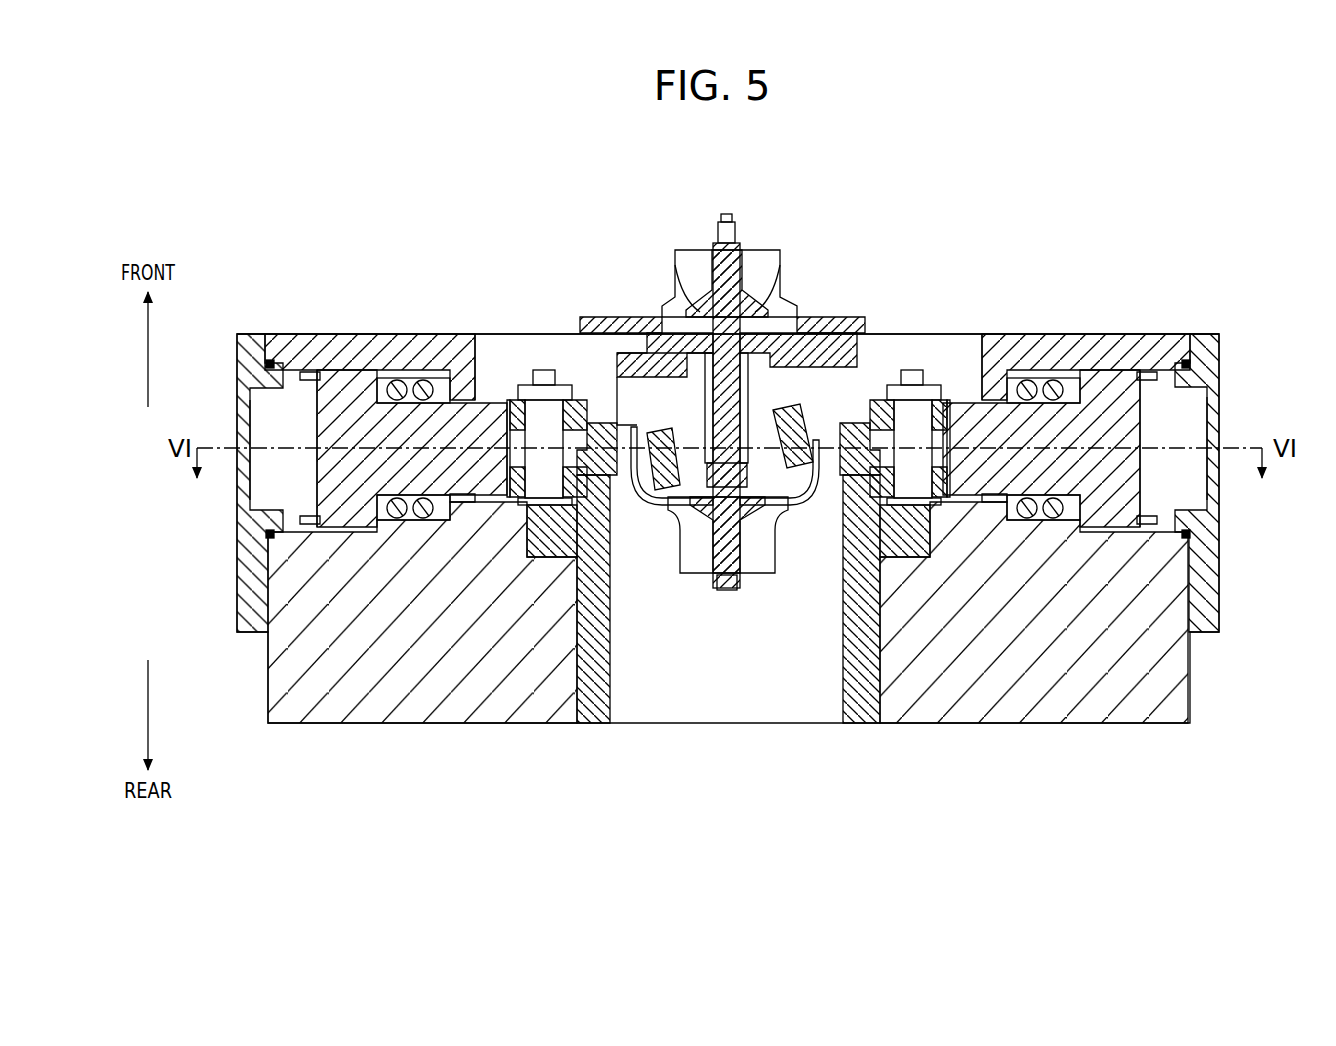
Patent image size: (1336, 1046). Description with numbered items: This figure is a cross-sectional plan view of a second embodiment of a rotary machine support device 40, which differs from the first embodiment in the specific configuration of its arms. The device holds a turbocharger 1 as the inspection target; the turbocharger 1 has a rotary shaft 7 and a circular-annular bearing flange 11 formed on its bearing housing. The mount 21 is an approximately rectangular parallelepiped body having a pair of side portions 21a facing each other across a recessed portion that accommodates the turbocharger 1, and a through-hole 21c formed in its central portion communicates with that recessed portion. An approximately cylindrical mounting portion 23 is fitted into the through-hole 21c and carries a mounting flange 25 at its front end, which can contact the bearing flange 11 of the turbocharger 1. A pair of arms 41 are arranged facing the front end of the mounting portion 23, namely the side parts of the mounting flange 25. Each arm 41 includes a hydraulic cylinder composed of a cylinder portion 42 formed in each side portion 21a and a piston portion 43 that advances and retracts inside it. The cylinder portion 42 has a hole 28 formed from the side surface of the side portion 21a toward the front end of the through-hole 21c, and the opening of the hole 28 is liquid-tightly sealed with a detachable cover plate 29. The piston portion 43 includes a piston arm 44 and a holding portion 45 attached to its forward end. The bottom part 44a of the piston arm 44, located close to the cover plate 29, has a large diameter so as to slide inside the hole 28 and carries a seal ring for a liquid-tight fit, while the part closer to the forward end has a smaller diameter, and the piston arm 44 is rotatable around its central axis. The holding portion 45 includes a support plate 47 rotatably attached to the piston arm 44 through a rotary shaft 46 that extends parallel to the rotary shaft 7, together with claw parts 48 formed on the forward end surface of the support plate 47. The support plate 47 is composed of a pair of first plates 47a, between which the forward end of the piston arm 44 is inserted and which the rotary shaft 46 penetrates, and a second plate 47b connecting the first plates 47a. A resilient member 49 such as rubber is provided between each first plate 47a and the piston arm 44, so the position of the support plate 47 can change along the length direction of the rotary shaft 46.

The turbocharger 1 is at (683, 218).
The rotary shaft 7 is at (728, 400).
The bearing flange 11 is at (665, 485).
The mount 21 is at (378, 727).
The side portions 21a is at (385, 345).
The through-hole 21c is at (877, 642).
The mounting portion 23 is at (577, 622).
The mounting flange 25 is at (640, 480).
The hole 28 is at (1085, 375).
The cover plate 29 is at (243, 410).
The rotary machine support device 40 is at (1205, 295).
The arms 41 is at (472, 355).
The cylinder portion 42 is at (297, 355).
The piston portion 43 is at (460, 520).
The piston arm 44 is at (488, 380).
The bottom part 44a is at (355, 405).
The holding portion 45 is at (595, 408).
The rotary shaft 46 is at (555, 408).
The support plate 47 is at (583, 393).
The first plates 47a is at (575, 415).
The second plate 47b is at (872, 420).
The claw parts 48 is at (612, 400).
The resilient member 49 is at (517, 415).